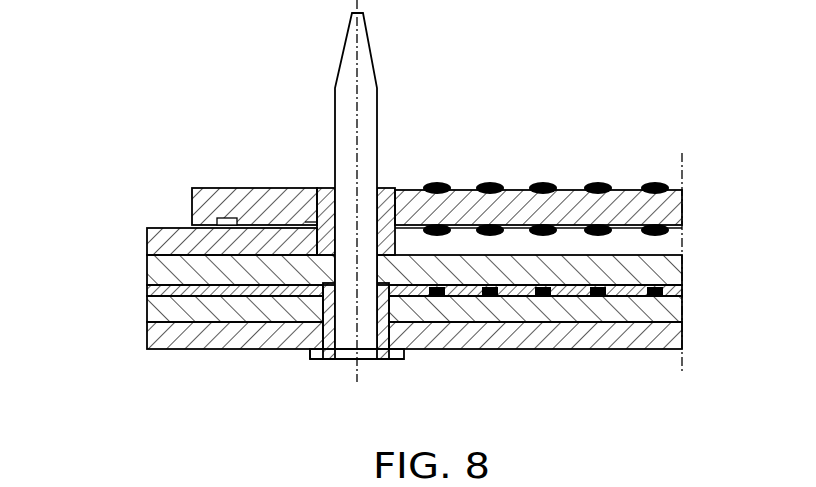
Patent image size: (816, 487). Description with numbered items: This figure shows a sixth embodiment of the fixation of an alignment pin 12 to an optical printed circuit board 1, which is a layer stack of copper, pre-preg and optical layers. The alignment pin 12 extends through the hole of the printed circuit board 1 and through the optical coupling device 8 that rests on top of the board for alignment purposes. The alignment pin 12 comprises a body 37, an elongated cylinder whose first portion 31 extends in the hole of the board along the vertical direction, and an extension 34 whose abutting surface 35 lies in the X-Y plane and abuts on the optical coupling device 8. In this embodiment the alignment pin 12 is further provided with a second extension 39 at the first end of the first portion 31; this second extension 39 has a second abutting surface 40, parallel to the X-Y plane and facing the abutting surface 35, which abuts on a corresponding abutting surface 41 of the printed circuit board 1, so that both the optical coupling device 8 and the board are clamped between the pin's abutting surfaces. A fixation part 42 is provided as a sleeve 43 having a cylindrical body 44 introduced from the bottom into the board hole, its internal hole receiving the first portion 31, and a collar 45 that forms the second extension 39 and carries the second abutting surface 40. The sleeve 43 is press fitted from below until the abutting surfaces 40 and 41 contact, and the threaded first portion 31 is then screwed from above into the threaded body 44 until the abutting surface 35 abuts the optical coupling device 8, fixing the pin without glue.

The printed circuit board 1 is at (122, 281).
The optical coupling device 8 is at (571, 208).
The alignment pin 12 is at (306, 59).
The first portion 31 is at (348, 263).
The extension 34 is at (316, 190).
The abutting surface 35 is at (398, 190).
The body 37 is at (366, 123).
The second extension 39 is at (322, 370).
The second abutting surface 40 is at (393, 353).
The abutting surface of the printed circuit board 41 is at (393, 337).
The fixation part 42 is at (320, 305).
The sleeve 43 is at (304, 366).
The body of the sleeve 44 is at (395, 310).
The collar 45 is at (387, 357).